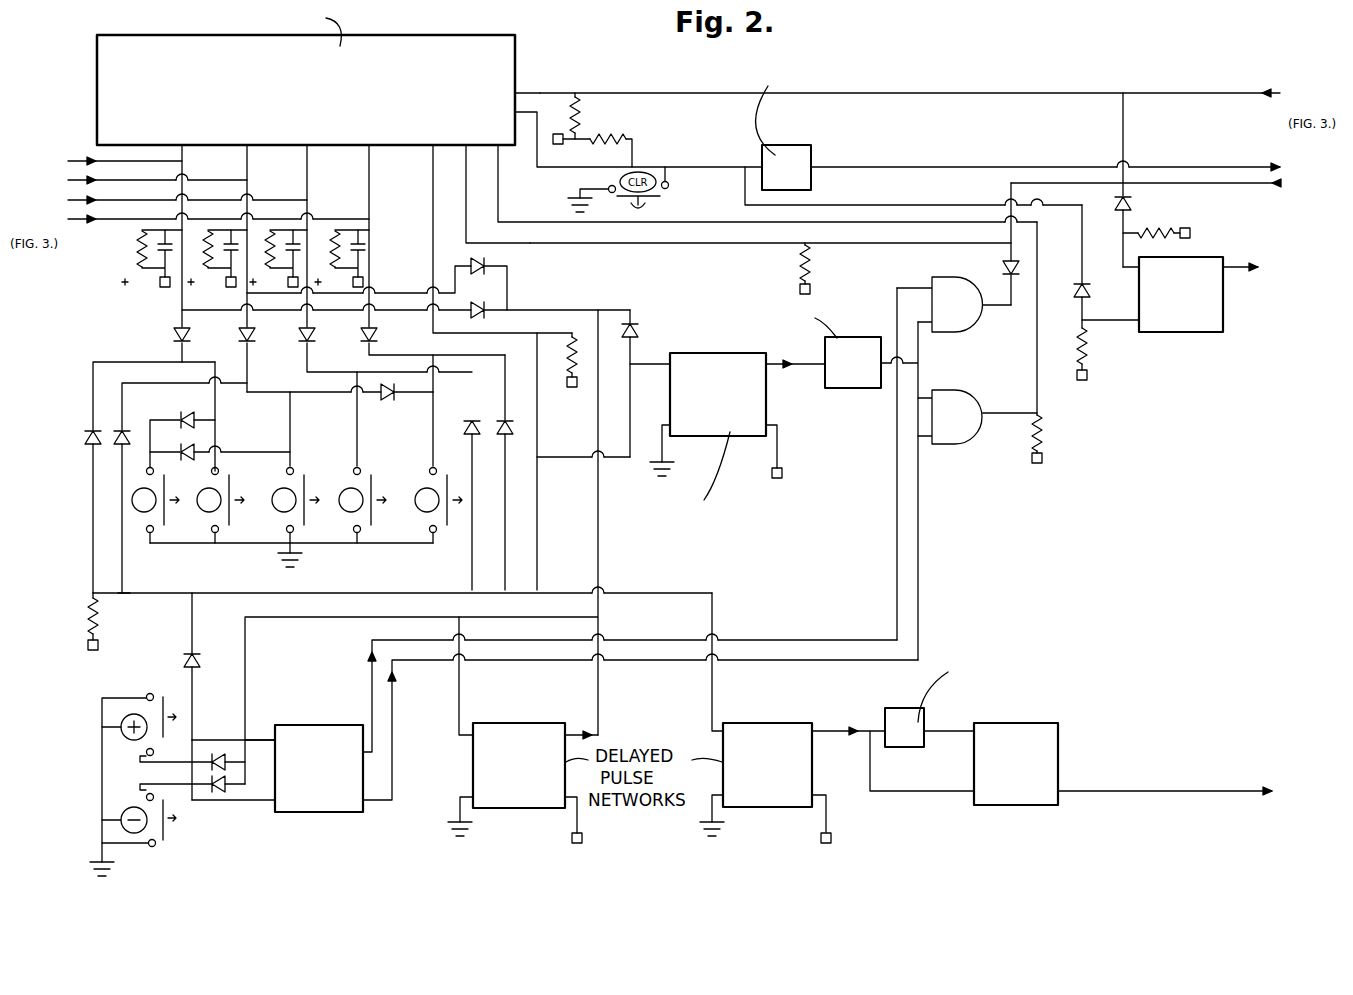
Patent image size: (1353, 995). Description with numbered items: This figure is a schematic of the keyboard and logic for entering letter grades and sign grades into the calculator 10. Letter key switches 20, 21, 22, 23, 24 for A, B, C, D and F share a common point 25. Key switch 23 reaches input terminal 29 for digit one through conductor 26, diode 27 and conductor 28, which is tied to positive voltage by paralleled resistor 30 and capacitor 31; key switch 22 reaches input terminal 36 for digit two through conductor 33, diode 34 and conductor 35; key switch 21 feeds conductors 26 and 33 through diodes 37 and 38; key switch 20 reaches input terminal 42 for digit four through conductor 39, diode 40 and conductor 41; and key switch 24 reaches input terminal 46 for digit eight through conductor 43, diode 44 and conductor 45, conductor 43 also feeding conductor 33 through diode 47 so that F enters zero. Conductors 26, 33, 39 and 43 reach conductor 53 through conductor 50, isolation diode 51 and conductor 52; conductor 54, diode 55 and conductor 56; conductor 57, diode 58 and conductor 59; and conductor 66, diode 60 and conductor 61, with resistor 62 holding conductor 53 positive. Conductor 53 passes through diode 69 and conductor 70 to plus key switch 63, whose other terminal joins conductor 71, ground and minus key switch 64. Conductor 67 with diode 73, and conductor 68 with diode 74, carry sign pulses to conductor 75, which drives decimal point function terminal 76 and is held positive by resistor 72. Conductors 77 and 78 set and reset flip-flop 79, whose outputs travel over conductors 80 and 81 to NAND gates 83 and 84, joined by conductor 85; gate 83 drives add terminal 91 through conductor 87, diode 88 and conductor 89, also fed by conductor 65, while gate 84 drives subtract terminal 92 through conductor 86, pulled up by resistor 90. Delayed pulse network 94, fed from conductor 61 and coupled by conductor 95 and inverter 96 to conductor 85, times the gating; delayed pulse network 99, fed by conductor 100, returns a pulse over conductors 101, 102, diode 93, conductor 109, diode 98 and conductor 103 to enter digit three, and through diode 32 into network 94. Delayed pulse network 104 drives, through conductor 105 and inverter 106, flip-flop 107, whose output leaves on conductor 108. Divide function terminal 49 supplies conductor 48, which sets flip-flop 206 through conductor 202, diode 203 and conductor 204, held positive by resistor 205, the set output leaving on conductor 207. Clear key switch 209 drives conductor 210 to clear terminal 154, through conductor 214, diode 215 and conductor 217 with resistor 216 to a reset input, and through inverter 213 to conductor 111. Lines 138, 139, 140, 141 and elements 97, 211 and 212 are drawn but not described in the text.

The calculator 10 is at (110, 93).
The letter key switch 20 is at (344, 484).
The letter key switch 21 is at (154, 504).
The letter key switch 22 is at (276, 484).
The letter key switch 23 is at (222, 504).
The letter key switch 24 is at (412, 484).
The common point 25 is at (308, 548).
The conductor 26 is at (216, 408).
The diode 27 is at (172, 338).
The conductor 28 is at (168, 287).
The input terminal 29 is at (182, 142).
The resistor 30 is at (136, 254).
The capacitor 31 is at (150, 266).
The diode 32 is at (641, 330).
The conductor 33 is at (295, 412).
The diode 34 is at (252, 340).
The conductor 35 is at (245, 238).
The input terminal 36 is at (246, 142).
The diode 37 is at (184, 414).
The diode 38 is at (196, 458).
The conductor 39 is at (360, 418).
The diode 40 is at (312, 338).
The conductor 41 is at (309, 250).
The input terminal 42 is at (310, 142).
The conductor 43 is at (433, 444).
The diode 44 is at (374, 335).
The conductor 45 is at (373, 258).
The input terminal 46 is at (374, 142).
The diode 47 is at (390, 404).
The conductor 48 is at (844, 94).
The divide function terminal 49 is at (514, 92).
The conductor 50 is at (92, 386).
The isolation diode 51 is at (86, 440).
The conductor 52 is at (82, 566).
The conductor 53 is at (129, 596).
The conductor 54 is at (120, 404).
The diode 55 is at (118, 445).
The conductor 56 is at (124, 568).
The conductor 57 is at (450, 373).
The diode 58 is at (472, 432).
The conductor 59 is at (458, 590).
The diode 60 is at (505, 464).
The conductor 61 is at (531, 520).
The resistor 62 is at (82, 618).
The key switch 63 is at (120, 720).
The key switch 64 is at (120, 822).
The conductor 65 is at (1266, 183).
The conductor 66 is at (502, 398).
The conductor 67 is at (130, 772).
The conductor 68 is at (130, 784).
The diode 69 is at (182, 661).
The conductor 70 is at (194, 694).
The conductor 71 is at (102, 779).
The resistor 72 is at (801, 278).
The diode 73 is at (210, 764).
The diode 74 is at (212, 788).
The conductor 75 is at (536, 360).
The decimal point function terminal 76 is at (433, 144).
The conductor 77 is at (195, 742).
The conductor 78 is at (216, 804).
The set-reset flip-flop 79 is at (302, 724).
The conductor 80 is at (368, 668).
The conductor 81 is at (410, 724).
The two-input NAND gate 83 is at (934, 276).
The two-input NAND gate 84 is at (952, 444).
The conductor 85 is at (915, 380).
The conductor 86 is at (1037, 395).
The conductor 87 is at (998, 306).
The diode 88 is at (996, 266).
The conductor 89 is at (845, 243).
The resistor 90 is at (1042, 432).
The add function terminal 91 is at (466, 144).
The subtract function terminal 92 is at (499, 144).
The diode 93 is at (486, 260).
The delayed pulse network 94 is at (766, 406).
The conductor 95 is at (804, 363).
The inverter 96 is at (852, 388).
The input line 97 is at (638, 366).
The diode 98 is at (486, 316).
The delayed pulse network 99 is at (516, 724).
The conductor 100 is at (460, 708).
The conductor 101 is at (600, 530).
The conductor 102 is at (525, 310).
The conductor 103 is at (225, 323).
The delayed pulse network 104 is at (754, 722).
The conductor 105 is at (832, 722).
The inverter 106 is at (906, 708).
The flip-flop 107 is at (1026, 722).
The conductor 108 is at (1138, 788).
The conductor 109 is at (377, 293).
The conductor 111 is at (915, 166).
The input line 138 is at (102, 162).
The input line 139 is at (134, 181).
The input line 140 is at (164, 201).
The input line 141 is at (195, 220).
The clear terminal 154 is at (514, 112).
The conductor 202 is at (1118, 142).
The diode 203 is at (1132, 203).
The conductor 204 is at (1122, 230).
The resistor 205 is at (1174, 224).
The flip-flop 206 is at (1178, 332).
The conductor 207 is at (1242, 269).
The key switch 209 is at (670, 184).
The conductor 210 is at (682, 166).
The resistor 211 is at (614, 144).
The resistor 212 is at (576, 120).
The inverter 213 is at (772, 144).
The conductor 214 is at (855, 206).
The diode 215 is at (1090, 290).
The resistor 216 is at (1091, 370).
The conductor 217 is at (1097, 326).